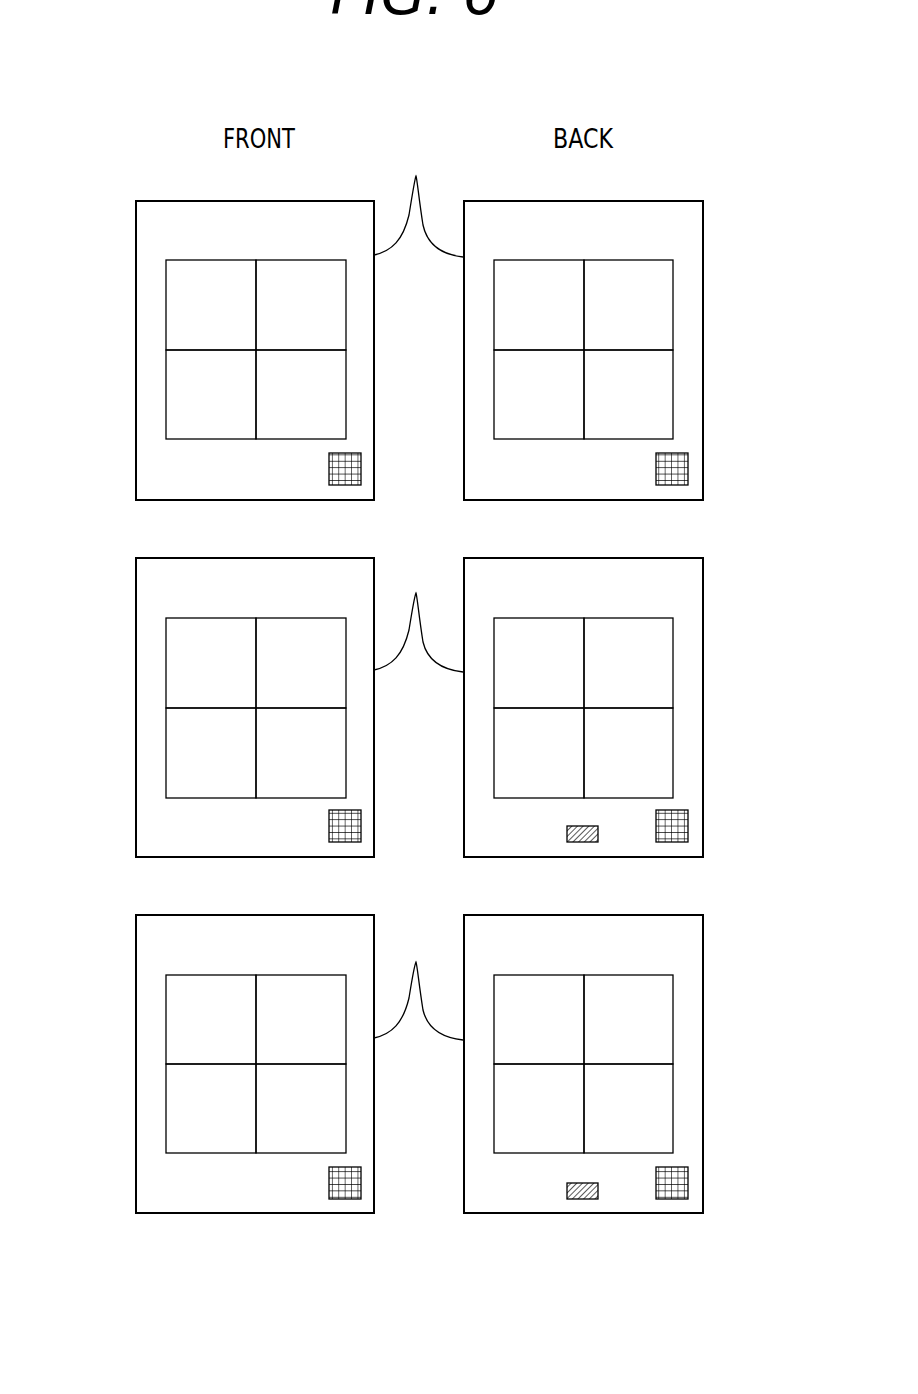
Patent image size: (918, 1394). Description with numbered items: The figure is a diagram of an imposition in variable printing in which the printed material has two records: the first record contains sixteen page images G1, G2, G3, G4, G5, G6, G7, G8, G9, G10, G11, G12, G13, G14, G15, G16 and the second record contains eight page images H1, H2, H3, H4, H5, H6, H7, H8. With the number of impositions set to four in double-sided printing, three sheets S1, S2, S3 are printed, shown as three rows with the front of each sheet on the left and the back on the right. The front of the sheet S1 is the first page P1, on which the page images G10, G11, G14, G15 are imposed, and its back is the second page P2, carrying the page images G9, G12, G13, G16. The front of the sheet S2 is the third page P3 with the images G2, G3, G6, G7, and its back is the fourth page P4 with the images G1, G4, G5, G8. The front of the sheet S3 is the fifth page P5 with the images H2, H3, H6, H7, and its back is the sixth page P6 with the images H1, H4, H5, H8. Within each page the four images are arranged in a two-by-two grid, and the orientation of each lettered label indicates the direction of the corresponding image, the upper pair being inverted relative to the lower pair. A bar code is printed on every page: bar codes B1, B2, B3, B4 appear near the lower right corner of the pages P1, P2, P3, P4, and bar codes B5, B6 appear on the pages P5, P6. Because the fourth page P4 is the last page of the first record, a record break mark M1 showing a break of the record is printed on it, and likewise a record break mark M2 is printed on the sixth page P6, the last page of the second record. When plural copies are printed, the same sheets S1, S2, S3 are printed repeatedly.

The first page P1 is at (136, 343).
The second page P2 is at (703, 333).
The third page P3 is at (136, 717).
The fourth page P4 is at (703, 723).
The fifth page P5 is at (136, 1060).
The sixth page P6 is at (703, 1068).
The sheet S1 is at (418, 201).
The sheet S2 is at (418, 616).
The sheet S3 is at (418, 985).
The bar code B1 is at (361, 463).
The bar code B2 is at (688, 463).
The bar code B3 is at (361, 822).
The bar code B4 is at (688, 823).
The bar code B5 is at (345, 1200).
The bar code B6 is at (672, 1200).
The record break mark M1 is at (583, 843).
The record break mark M2 is at (583, 1200).
The page image G1 is at (628, 753).
The page image G2 is at (211, 753).
The page image G3 is at (211, 663).
The page image G4 is at (628, 663).
The page image G5 is at (539, 663).
The page image G6 is at (301, 663).
The page image G7 is at (301, 753).
The page image G8 is at (539, 753).
The page image G9 is at (628, 394).
The page image G10 is at (211, 394).
The page image G11 is at (211, 305).
The page image G12 is at (628, 305).
The page image G13 is at (539, 305).
The page image G14 is at (301, 305).
The page image G15 is at (301, 394).
The page image G16 is at (539, 394).
The page image H1 is at (628, 1108).
The page image H2 is at (211, 1108).
The page image H3 is at (211, 1019).
The page image H4 is at (628, 1019).
The page image H5 is at (539, 1019).
The page image H6 is at (301, 1019).
The page image H7 is at (301, 1108).
The page image H8 is at (539, 1108).